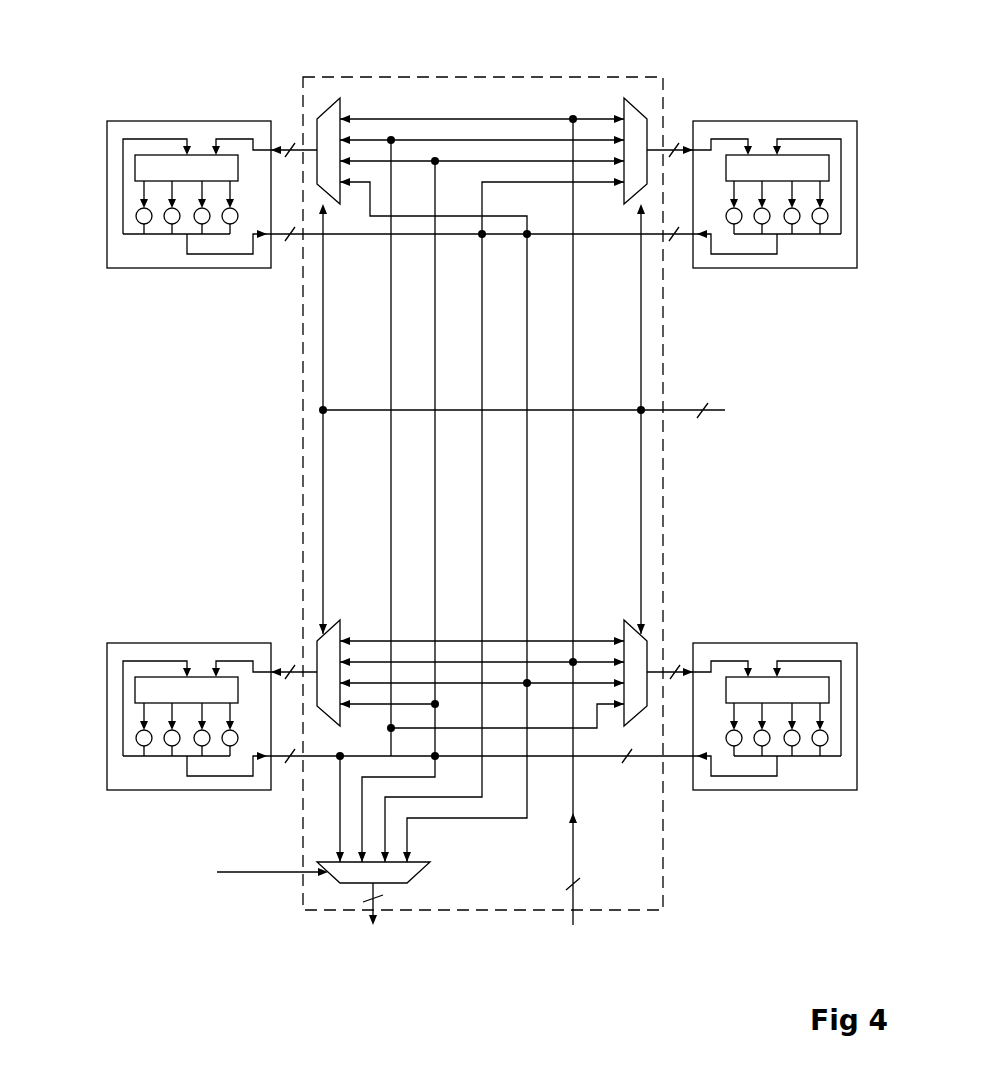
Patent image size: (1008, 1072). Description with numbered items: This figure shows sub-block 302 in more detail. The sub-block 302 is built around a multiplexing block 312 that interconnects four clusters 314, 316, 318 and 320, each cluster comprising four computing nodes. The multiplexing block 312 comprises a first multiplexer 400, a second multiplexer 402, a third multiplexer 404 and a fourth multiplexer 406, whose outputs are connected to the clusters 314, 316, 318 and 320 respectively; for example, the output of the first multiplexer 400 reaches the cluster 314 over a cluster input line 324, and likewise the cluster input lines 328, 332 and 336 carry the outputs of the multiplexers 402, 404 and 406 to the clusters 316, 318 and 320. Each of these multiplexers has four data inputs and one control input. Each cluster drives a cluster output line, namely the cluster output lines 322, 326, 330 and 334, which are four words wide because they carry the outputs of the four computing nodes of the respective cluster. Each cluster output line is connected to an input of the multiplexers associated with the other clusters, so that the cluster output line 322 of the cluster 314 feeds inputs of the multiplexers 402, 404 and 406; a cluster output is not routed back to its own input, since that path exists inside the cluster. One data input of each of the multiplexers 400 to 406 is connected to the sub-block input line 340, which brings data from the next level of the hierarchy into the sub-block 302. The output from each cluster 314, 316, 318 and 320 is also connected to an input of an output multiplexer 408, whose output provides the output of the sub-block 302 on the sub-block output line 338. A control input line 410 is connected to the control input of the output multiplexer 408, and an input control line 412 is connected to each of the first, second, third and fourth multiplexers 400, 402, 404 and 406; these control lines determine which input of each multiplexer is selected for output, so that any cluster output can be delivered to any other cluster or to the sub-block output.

The sub-block 302 is at (106, 71).
The multiplexing block 312 is at (663, 77).
The cluster 314 is at (181, 121).
The cluster 316 is at (791, 121).
The cluster 318 is at (160, 645).
The cluster 320 is at (778, 643).
The cluster output line 322 is at (283, 240).
The cluster input line 324 is at (290, 148).
The cluster output line 326 is at (680, 240).
The cluster input line 328 is at (661, 145).
The cluster output line 330 is at (283, 753).
The cluster input line 332 is at (290, 665).
The cluster output line 334 is at (690, 790).
The cluster input line 336 is at (672, 670).
The sub-block output line 338 is at (385, 905).
The sub-block input line 340 is at (573, 905).
The first multiplexer 400 is at (343, 110).
The second multiplexer 402 is at (621, 114).
The third multiplexer 404 is at (333, 625).
The fourth multiplexer 406 is at (627, 625).
The output multiplexer 408 is at (432, 870).
The control input line 410 is at (250, 873).
The input control line 412 is at (712, 410).